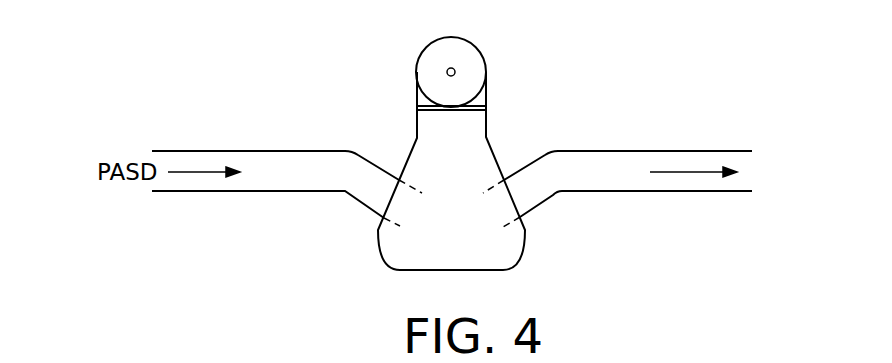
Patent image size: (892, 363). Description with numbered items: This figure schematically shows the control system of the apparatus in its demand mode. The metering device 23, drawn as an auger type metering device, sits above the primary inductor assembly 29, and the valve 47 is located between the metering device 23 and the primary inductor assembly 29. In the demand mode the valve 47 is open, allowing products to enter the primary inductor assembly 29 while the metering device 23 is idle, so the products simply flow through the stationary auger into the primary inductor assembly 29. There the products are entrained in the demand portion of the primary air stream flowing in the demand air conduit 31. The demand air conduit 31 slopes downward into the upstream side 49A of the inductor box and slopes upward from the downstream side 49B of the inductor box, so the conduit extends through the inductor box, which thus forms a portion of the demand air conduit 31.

The metering device 23 is at (486, 58).
The valve 47 is at (465, 111).
The primary inductor assembly 29 is at (503, 270).
The upstream side of the inductor box 49A is at (377, 229).
The downstream side of the inductor box 49B is at (525, 229).
The demand air conduit 31 is at (662, 151).